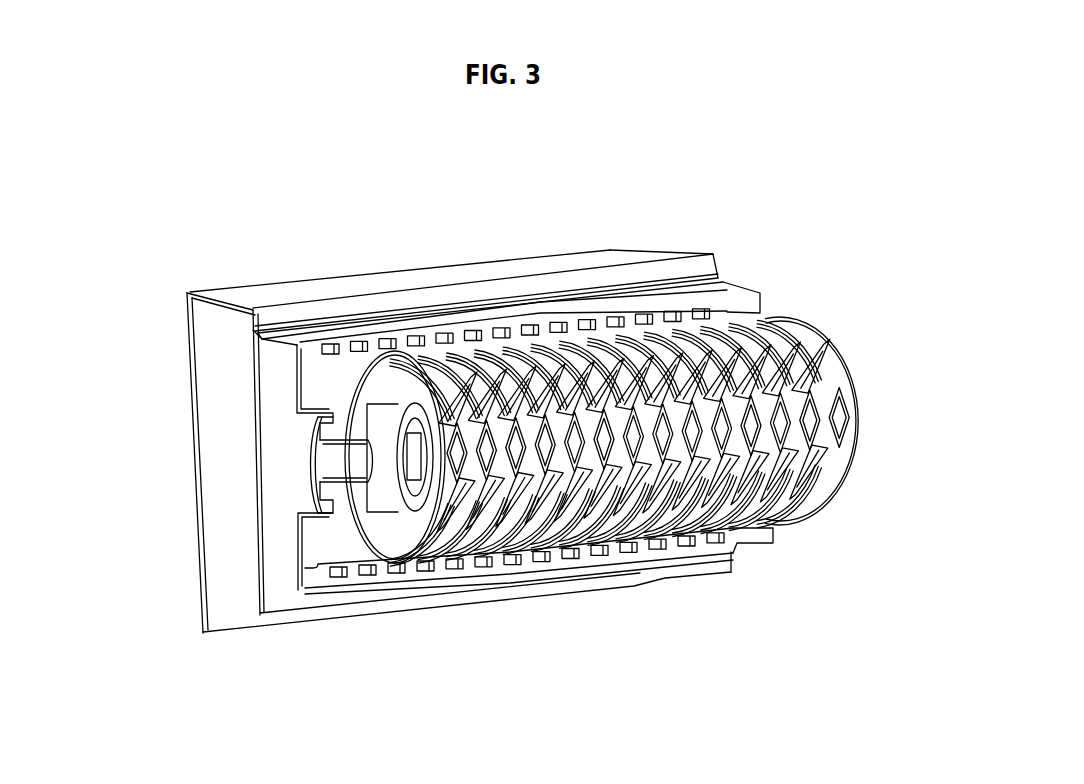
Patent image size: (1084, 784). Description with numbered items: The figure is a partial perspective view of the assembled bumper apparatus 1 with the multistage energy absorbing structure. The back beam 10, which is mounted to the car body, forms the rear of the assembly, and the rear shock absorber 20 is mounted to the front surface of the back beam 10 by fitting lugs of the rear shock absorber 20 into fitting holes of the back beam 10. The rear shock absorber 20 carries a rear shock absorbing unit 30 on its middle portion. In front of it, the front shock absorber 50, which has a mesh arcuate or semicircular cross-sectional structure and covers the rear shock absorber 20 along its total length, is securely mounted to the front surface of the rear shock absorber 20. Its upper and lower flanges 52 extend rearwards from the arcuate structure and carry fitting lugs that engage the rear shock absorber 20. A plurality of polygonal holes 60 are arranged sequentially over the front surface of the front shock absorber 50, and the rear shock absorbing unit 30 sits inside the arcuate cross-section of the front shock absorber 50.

The bumper apparatus 1 is at (786, 242).
The back beam 10 is at (203, 323).
The rear shock absorber 20 is at (285, 312).
The rear shock absorbing unit 30 is at (294, 466).
The front shock absorber 50 is at (570, 355).
The upper and lower flanges 52 is at (656, 304).
The polygonal holes 60 is at (792, 345).